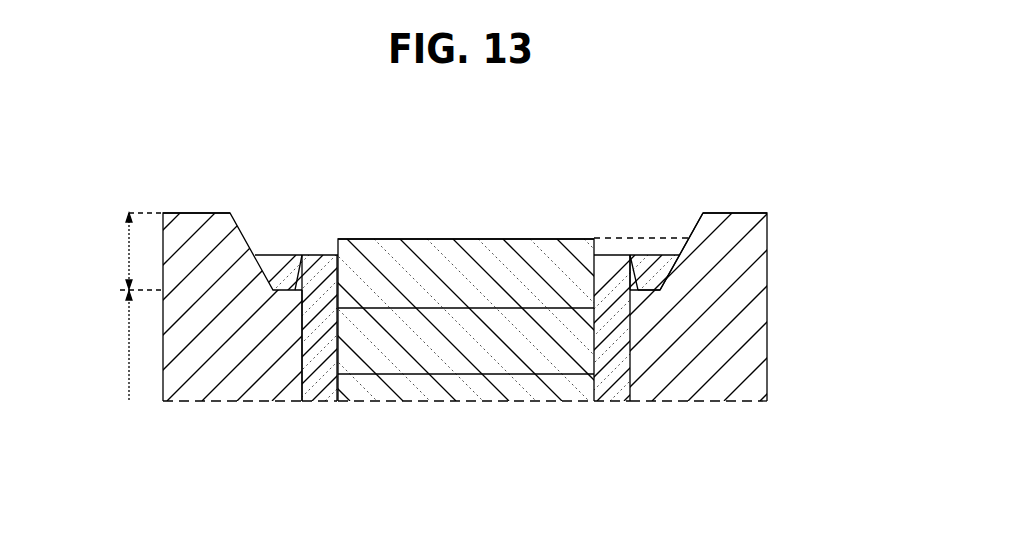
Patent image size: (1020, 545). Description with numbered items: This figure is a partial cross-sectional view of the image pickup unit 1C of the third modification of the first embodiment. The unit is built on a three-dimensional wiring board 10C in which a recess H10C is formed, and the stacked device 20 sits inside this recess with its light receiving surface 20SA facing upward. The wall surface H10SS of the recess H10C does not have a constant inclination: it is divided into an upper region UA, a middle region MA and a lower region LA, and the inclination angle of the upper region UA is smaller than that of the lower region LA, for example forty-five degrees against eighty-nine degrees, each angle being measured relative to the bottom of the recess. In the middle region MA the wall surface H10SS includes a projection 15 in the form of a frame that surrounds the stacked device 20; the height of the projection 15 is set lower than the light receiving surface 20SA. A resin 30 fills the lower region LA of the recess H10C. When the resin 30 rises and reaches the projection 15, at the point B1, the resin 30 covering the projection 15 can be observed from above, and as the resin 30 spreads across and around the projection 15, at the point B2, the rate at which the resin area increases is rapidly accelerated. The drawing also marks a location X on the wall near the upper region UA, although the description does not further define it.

The image pickup unit 1C is at (689, 140).
The three-dimensional wiring board 10C is at (748, 212).
The recess H10C is at (525, 180).
The wall surface H10SS is at (306, 342).
The projection 15 is at (297, 270).
The resin 30 is at (312, 253).
The stacked device 20 is at (533, 239).
The light receiving surface 20SA is at (412, 237).
The point B1 is at (630, 277).
The point B2 is at (661, 290).
The intersection point X is at (689, 238).
The upper region UA is at (122, 251).
The middle region MA is at (122, 291).
The lower region LA is at (107, 345).